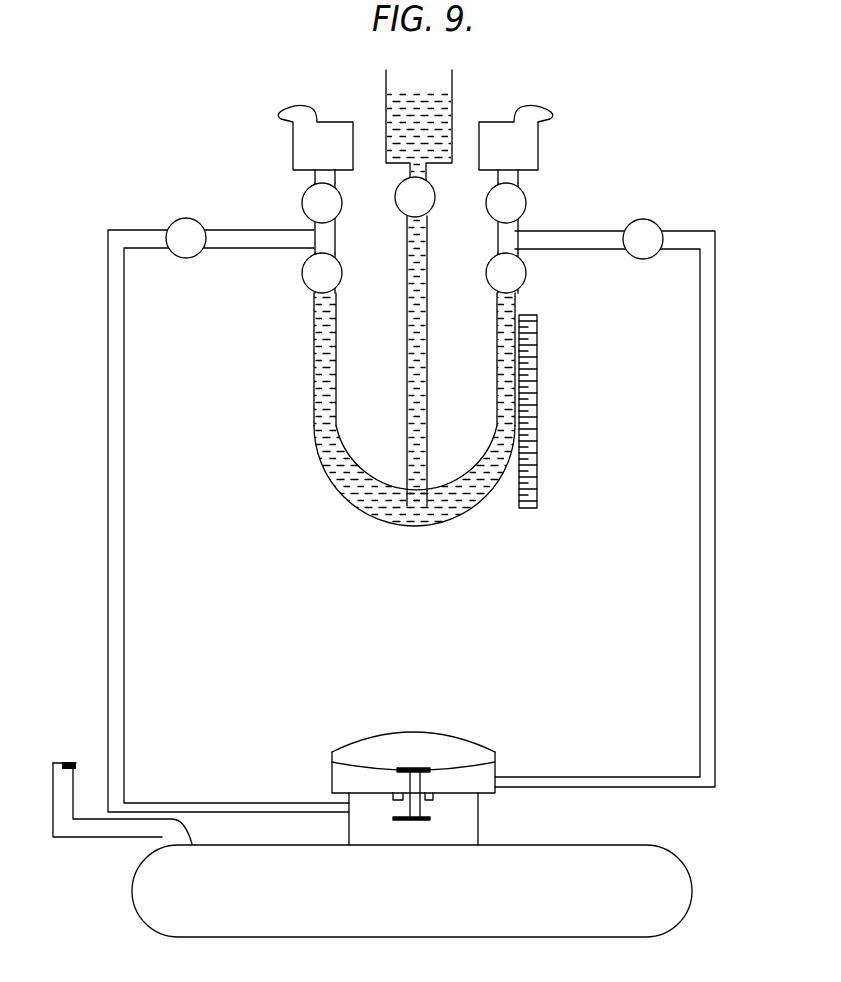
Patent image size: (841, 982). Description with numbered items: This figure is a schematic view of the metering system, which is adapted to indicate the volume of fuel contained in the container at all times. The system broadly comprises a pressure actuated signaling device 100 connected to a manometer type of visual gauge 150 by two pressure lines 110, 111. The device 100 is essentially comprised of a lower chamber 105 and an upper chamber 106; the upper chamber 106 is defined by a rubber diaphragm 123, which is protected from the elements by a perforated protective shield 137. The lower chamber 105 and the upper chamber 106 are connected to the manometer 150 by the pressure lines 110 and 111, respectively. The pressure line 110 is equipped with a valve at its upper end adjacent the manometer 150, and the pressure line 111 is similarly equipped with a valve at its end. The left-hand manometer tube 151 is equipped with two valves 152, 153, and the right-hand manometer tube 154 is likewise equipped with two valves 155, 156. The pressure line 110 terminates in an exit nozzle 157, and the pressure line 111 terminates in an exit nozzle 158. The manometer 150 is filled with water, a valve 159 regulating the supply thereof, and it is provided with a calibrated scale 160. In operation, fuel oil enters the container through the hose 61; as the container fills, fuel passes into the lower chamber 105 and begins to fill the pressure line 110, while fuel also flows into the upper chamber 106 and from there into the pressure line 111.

The hose 61 is at (68, 763).
The pressure actuated signaling device 100 is at (413, 758).
The lower chamber 105 is at (467, 833).
The upper chamber 106 is at (483, 791).
The pressure line 110 is at (200, 232).
The pressure line 111 is at (656, 231).
The rubber diaphragm 123 is at (375, 768).
The perforated protective shield 137 is at (463, 748).
The manometer 150 is at (359, 371).
The left-hand manometer tube 151 is at (314, 436).
The valve 152 is at (339, 277).
The valve 153 is at (339, 207).
The right-hand manometer tube 154 is at (503, 397).
The valve 155 is at (522, 277).
The valve 156 is at (522, 207).
The exit nozzle 157 is at (279, 118).
The exit nozzle 158 is at (551, 118).
The valve 159 is at (429, 205).
The calibrated scale 160 is at (539, 431).